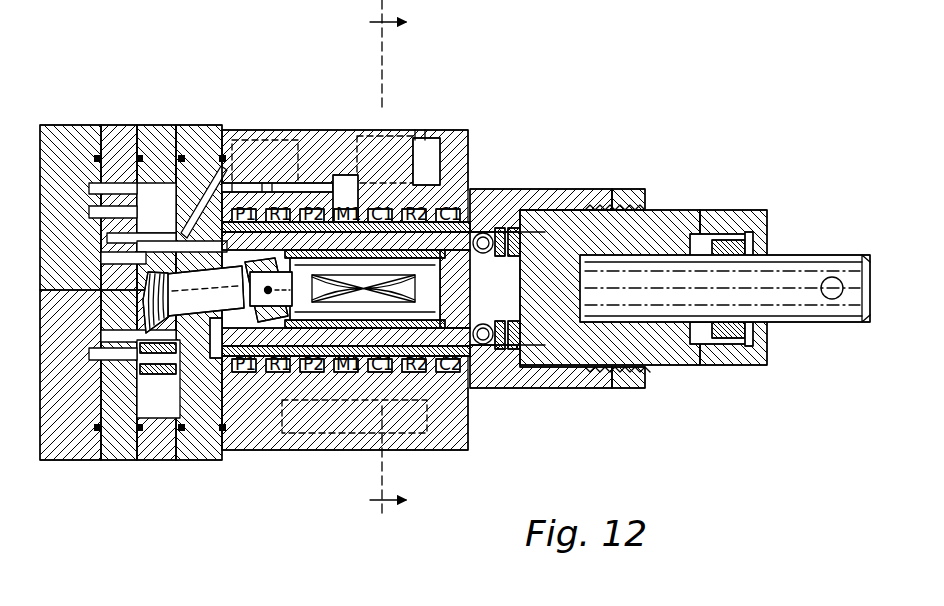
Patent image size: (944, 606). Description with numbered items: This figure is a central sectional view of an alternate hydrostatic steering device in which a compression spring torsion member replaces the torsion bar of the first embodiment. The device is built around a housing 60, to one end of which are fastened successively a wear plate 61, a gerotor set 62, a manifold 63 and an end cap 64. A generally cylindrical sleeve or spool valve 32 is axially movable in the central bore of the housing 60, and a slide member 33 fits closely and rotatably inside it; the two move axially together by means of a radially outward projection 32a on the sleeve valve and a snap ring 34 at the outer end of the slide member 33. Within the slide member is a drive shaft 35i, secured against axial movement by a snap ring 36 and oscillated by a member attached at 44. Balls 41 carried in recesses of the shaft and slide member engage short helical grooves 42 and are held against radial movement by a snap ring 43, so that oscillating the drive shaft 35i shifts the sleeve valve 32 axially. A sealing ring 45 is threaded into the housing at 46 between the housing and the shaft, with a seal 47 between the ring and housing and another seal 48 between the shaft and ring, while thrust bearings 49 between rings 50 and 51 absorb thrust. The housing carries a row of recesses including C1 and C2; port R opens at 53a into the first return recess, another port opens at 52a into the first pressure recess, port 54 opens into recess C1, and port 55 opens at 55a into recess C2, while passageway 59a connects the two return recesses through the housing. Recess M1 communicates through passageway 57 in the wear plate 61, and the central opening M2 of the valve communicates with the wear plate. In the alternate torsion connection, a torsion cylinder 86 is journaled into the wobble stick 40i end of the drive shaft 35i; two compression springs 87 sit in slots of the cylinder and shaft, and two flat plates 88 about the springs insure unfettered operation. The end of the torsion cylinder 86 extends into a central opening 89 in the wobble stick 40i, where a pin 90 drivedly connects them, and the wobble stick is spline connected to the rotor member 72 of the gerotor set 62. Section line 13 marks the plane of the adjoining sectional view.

The end cap 64 is at (87, 125).
The manifold 63 is at (120, 125).
The gerotor set 62 is at (158, 125).
The wear plate 61 is at (194, 125).
The passageway 57 is at (180, 208).
The recess M1 is at (150, 242).
The central opening M2 is at (149, 302).
The rotor member 72 is at (142, 262).
The wobble stick 40i is at (184, 374).
The housing 60 is at (332, 130).
The port opening 53a is at (318, 130).
The port 54 is at (366, 130).
The slide member 33 is at (426, 161).
The passageway 59a is at (343, 433).
The port 55 is at (394, 130).
The port opening 55a is at (474, 146).
The torsion cylinder 86 is at (447, 330).
The compression springs 87 is at (365, 378).
The flat plates 88 is at (367, 302).
The pin 90 is at (305, 306).
The central opening 89 is at (240, 288).
The snap ring 34 is at (212, 350).
The thrust bearings 49 is at (532, 188).
The seal 47 is at (573, 188).
The drive shaft 35i is at (650, 325).
The snap ring 36 is at (548, 240).
The sealing ring 45 is at (750, 210).
The threaded connection 46 is at (647, 210).
The seal 48 is at (712, 210).
The attachment point 44 is at (830, 277).
The snap ring 43 is at (495, 236).
The sleeve or spool valve 32 is at (477, 232).
The radially outward projection 32a is at (492, 228).
The balls 41 is at (490, 309).
The helical grooves 42 is at (476, 364).
The ring 50 is at (523, 364).
The ring 51 is at (537, 364).
The port R is at (248, 136).
The port opening 52a is at (262, 136).
The recess C2 is at (415, 130).
The recess C1 is at (426, 128).
The section line 13 is at (404, 257).